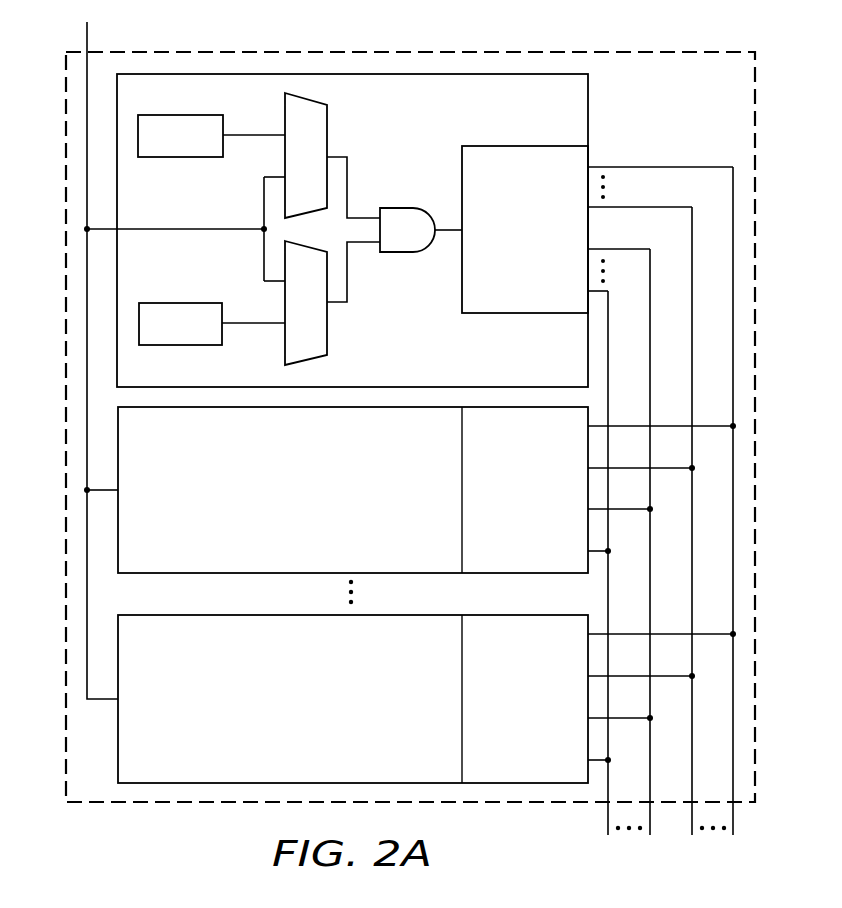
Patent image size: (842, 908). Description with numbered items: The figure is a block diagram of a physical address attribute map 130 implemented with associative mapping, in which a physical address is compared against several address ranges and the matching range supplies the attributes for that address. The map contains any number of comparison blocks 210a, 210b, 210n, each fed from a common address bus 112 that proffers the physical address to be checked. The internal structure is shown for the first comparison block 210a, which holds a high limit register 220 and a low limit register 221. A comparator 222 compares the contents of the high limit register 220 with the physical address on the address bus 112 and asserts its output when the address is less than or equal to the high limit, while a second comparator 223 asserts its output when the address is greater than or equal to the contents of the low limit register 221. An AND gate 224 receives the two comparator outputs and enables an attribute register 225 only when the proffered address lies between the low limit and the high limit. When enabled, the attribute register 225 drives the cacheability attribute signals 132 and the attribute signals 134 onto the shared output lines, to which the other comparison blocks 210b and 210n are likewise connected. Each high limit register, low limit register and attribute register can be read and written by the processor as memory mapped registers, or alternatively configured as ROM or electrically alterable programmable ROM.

The address bus 112 is at (87, 35).
The physical address attribute map 130 is at (757, 424).
The cacheability attribute signals 132 is at (608, 843).
The attribute signals 134 is at (692, 843).
The comparison block 210a is at (499, 365).
The comparison block 210b is at (139, 547).
The comparison block 210n is at (139, 759).
The high limit register 220 is at (182, 157).
The low limit register 221 is at (182, 303).
The comparator 222 is at (329, 131).
The comparator 223 is at (329, 326).
The AND gate 224 is at (393, 208).
The attribute register 225 is at (524, 146).